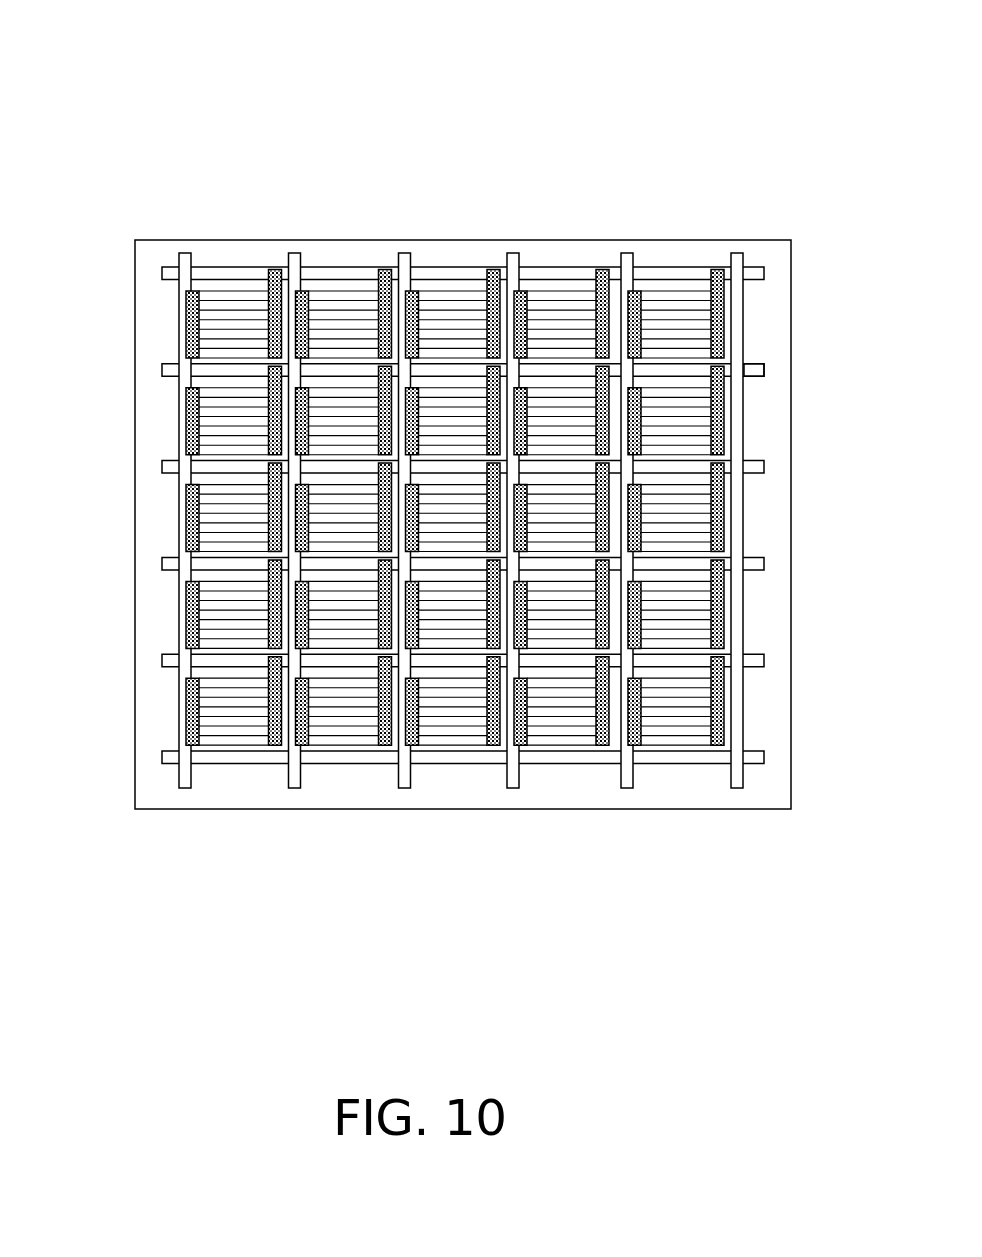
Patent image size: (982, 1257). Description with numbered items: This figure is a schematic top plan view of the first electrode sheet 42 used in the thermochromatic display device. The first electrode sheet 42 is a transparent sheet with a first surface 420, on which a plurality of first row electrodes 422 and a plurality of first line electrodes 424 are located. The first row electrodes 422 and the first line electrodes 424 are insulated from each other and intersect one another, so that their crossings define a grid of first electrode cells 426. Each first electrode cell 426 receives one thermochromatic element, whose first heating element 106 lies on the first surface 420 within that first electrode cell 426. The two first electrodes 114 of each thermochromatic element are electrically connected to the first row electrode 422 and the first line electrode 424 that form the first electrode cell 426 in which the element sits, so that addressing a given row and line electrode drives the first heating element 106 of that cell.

The first electrode sheet 42 is at (465, 73).
The first surface 420 is at (469, 246).
The first row electrode 422 is at (758, 365).
The first line electrode 424 is at (737, 305).
The first electrode cell 426 is at (673, 285).
The first electrode 114 is at (277, 267).
The first heating element 106 is at (333, 293).